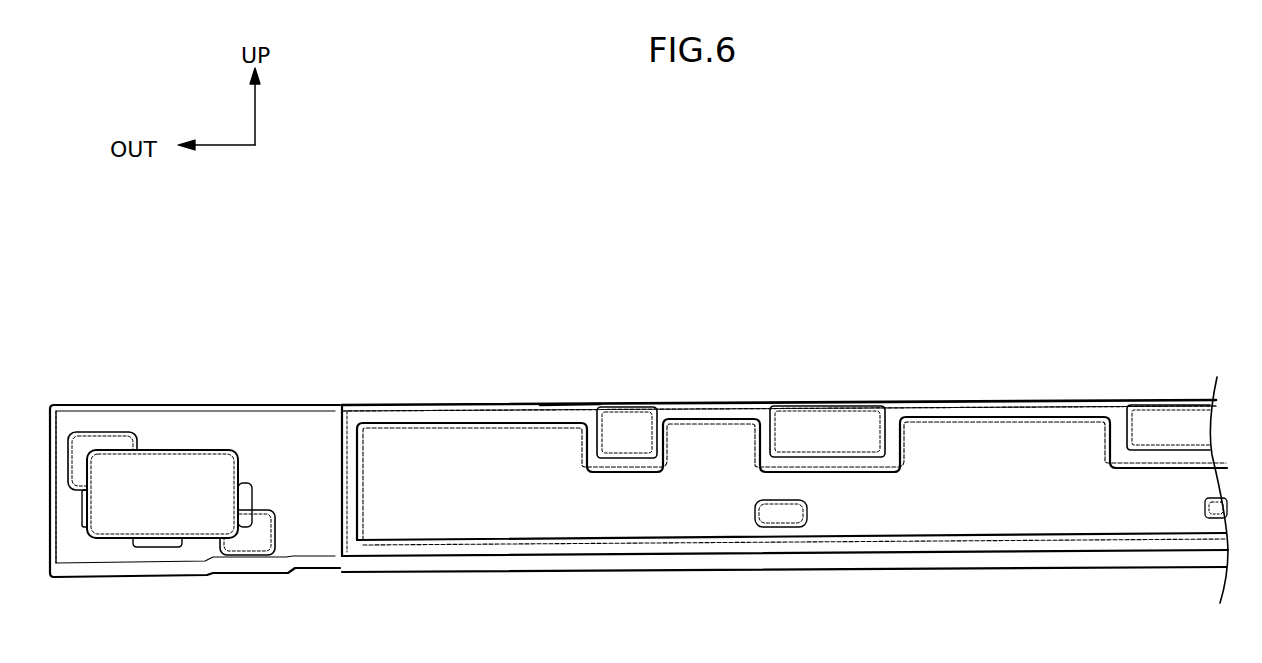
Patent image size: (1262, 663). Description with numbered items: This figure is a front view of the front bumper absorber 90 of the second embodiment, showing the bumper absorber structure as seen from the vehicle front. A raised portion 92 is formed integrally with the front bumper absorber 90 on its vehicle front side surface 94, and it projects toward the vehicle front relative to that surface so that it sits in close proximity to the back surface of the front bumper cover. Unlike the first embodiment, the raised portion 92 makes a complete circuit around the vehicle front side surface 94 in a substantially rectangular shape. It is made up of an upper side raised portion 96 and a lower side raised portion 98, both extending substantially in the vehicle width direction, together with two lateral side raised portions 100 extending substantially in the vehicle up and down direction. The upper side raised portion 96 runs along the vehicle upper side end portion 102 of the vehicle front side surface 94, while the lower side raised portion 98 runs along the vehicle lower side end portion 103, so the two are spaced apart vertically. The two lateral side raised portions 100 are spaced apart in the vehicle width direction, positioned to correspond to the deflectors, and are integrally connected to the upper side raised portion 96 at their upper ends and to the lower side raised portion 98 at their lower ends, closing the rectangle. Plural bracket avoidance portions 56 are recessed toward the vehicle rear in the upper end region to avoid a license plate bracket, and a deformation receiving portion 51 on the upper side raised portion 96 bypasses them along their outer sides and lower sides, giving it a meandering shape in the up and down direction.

The deformation receiving portion 51 is at (847, 476).
The bracket avoidance portions 56 is at (625, 430).
The front bumper absorber 90 is at (200, 405).
The raised portion 92 is at (420, 407).
The vehicle front side surface 94 is at (270, 443).
The upper side raised portion 96 is at (485, 409).
The lower side raised portion 98 is at (533, 548).
The lateral side raised portions 100 is at (355, 481).
The vehicle upper side end portion 102 is at (565, 408).
The vehicle lower side end portion 103 is at (705, 573).